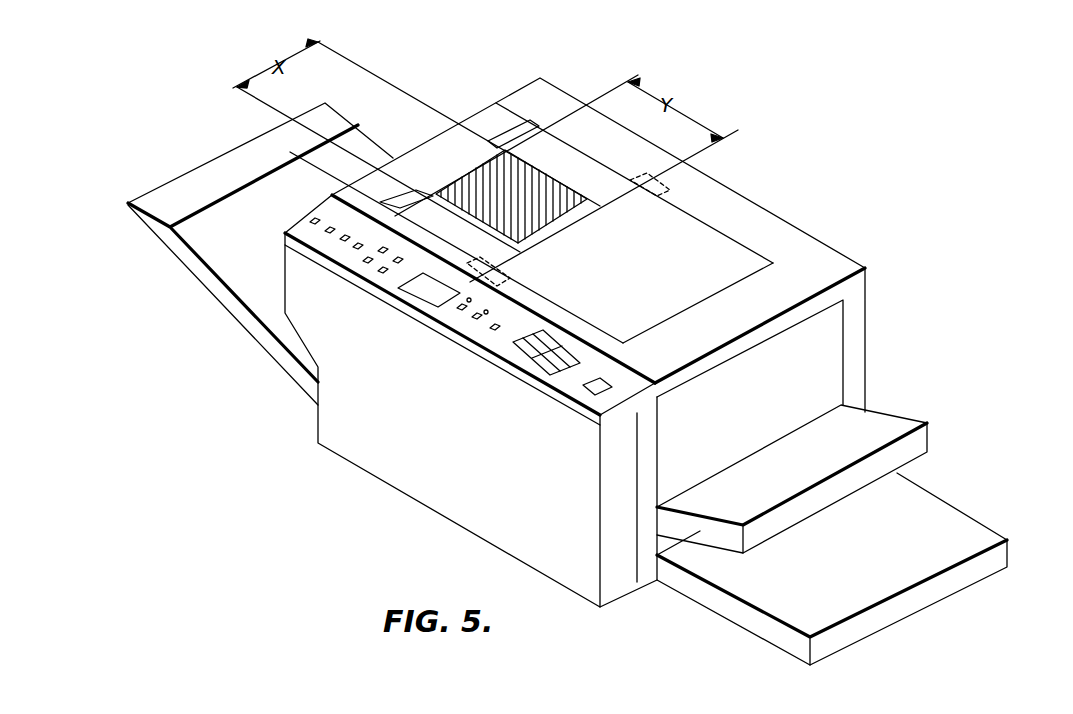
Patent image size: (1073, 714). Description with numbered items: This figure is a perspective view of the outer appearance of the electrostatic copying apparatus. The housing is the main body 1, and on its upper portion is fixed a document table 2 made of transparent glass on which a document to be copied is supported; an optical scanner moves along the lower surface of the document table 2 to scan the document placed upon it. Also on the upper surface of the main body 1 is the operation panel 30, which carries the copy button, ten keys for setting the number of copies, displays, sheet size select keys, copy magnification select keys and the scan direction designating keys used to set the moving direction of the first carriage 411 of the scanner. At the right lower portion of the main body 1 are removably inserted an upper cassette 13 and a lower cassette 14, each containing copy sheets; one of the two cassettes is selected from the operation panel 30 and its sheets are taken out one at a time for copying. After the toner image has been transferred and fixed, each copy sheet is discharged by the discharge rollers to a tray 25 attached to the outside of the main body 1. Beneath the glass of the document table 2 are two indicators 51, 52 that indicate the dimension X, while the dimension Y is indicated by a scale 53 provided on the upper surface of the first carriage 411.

The main body 1 is at (447, 499).
The document table 2 is at (728, 252).
The upper cassette 13 is at (930, 440).
The lower cassette 14 is at (1003, 546).
The tray 25 is at (190, 264).
The operation panel 30 is at (460, 328).
The first carriage 411 is at (567, 248).
The indicator 51 is at (525, 153).
The indicator 52 is at (383, 200).
The scale 53 is at (615, 198).